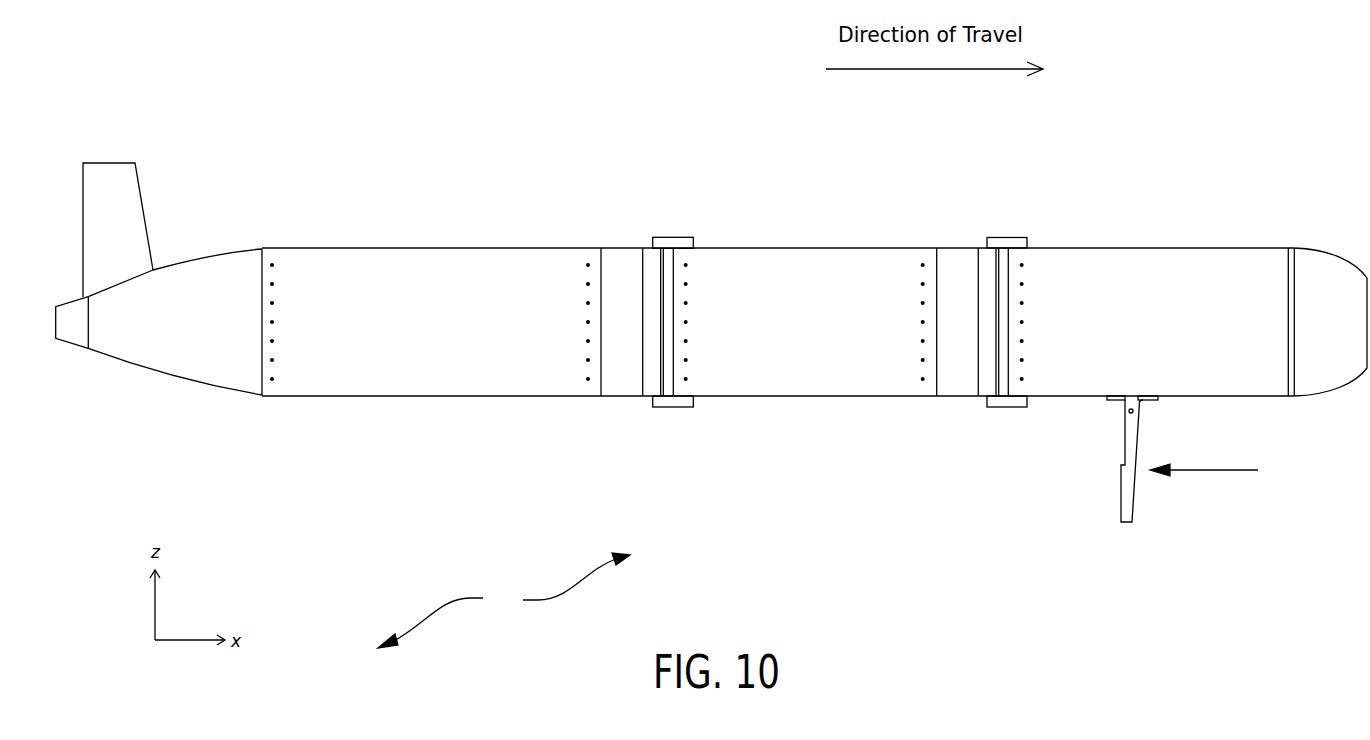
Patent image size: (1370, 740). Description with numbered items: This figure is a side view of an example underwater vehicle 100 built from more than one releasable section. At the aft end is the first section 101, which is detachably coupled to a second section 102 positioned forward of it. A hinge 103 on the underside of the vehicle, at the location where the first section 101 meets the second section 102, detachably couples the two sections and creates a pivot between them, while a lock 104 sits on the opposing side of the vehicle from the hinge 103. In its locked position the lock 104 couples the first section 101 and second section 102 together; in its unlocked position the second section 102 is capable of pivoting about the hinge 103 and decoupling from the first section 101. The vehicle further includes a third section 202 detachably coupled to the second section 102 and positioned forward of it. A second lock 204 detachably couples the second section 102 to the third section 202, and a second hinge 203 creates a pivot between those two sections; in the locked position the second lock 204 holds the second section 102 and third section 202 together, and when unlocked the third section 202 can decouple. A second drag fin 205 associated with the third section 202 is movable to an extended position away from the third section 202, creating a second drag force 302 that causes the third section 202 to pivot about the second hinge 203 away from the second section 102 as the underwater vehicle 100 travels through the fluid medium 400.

The underwater vehicle 100 is at (581, 150).
The first section 101 is at (370, 247).
The second section 102 is at (785, 247).
The hinge 103 is at (672, 408).
The lock 104 is at (670, 237).
The third section 202 is at (1142, 247).
The second hinge 203 is at (1007, 408).
The second lock 204 is at (1007, 237).
The second drag fin 205 is at (1122, 485).
The second drag force 302 is at (1204, 488).
The fluid medium 400 is at (504, 600).